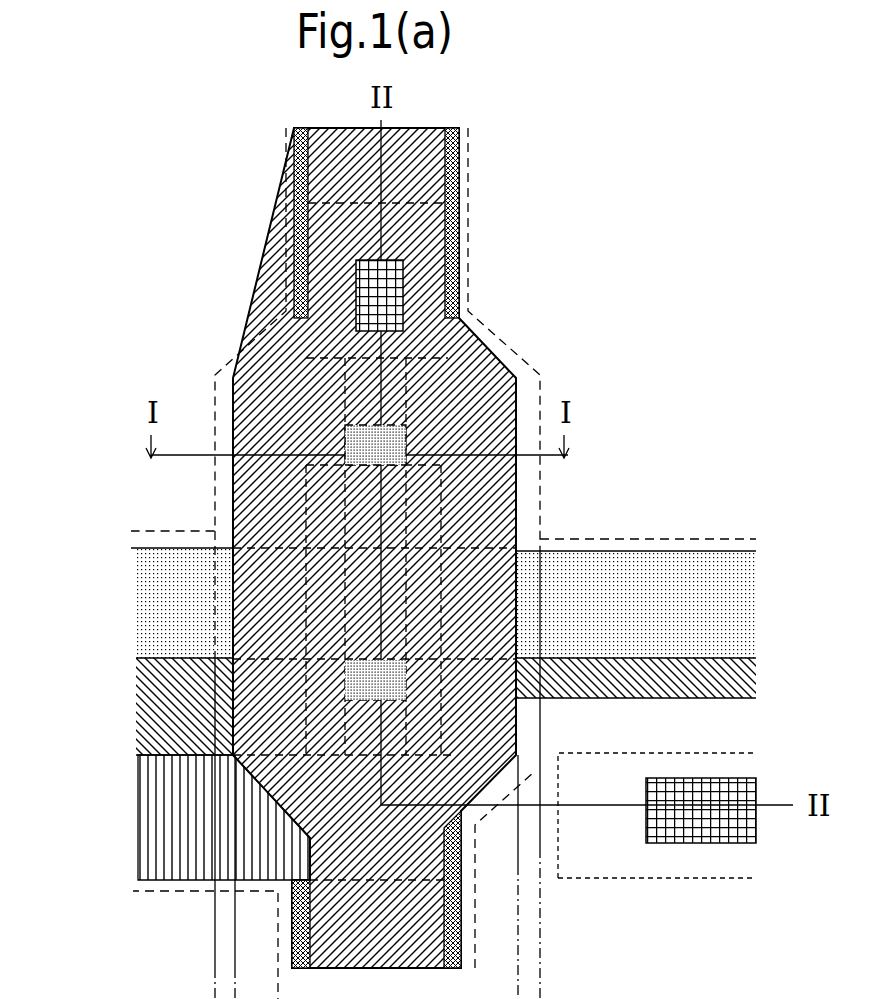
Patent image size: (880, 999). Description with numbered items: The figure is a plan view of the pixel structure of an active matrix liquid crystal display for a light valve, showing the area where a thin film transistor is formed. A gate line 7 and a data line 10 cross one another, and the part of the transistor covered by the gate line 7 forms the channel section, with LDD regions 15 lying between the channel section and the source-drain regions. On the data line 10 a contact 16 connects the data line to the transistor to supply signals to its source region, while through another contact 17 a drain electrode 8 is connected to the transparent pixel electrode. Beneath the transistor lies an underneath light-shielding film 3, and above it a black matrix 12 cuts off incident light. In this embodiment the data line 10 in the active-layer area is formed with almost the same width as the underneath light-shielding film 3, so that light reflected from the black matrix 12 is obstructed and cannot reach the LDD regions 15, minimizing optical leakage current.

The underneath light-shielding film 3 is at (450, 277).
The gate line 7 is at (622, 568).
The drain electrode 8 is at (173, 800).
The data line 10 is at (448, 140).
The black matrix 12 is at (460, 205).
The LDD region 15 is at (350, 440).
The contact 16 is at (350, 293).
The contact 17 is at (672, 822).